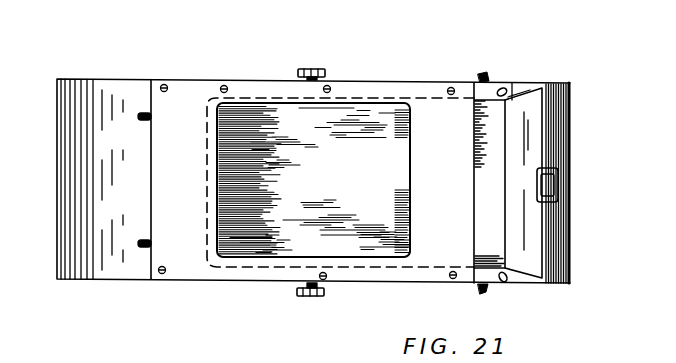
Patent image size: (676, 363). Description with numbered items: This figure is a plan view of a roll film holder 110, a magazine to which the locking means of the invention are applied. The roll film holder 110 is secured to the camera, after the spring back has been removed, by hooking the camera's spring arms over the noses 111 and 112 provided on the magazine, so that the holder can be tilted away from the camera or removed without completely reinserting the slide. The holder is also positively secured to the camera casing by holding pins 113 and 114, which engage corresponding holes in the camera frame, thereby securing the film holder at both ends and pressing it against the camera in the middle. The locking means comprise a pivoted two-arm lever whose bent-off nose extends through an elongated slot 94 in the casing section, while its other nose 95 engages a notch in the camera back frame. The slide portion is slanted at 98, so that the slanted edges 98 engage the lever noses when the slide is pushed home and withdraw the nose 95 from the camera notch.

The roll film holder 110 is at (382, 76).
The nose 111 is at (307, 300).
The nose 112 is at (300, 69).
The holding pin 113 is at (140, 118).
The holding pin 114 is at (140, 243).
The elongated slot 94 is at (508, 91).
The nose 95 is at (488, 75).
The slanted edge 98 is at (547, 84).